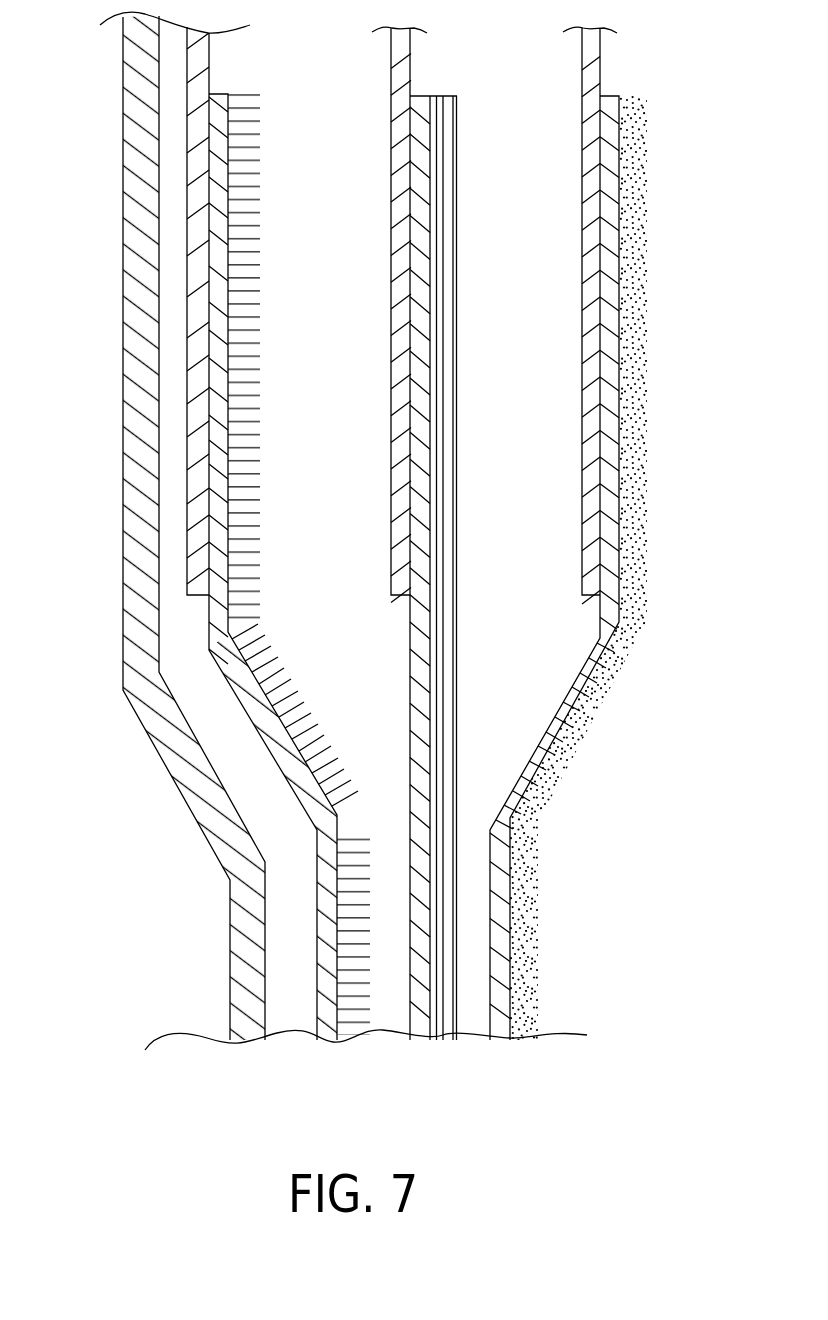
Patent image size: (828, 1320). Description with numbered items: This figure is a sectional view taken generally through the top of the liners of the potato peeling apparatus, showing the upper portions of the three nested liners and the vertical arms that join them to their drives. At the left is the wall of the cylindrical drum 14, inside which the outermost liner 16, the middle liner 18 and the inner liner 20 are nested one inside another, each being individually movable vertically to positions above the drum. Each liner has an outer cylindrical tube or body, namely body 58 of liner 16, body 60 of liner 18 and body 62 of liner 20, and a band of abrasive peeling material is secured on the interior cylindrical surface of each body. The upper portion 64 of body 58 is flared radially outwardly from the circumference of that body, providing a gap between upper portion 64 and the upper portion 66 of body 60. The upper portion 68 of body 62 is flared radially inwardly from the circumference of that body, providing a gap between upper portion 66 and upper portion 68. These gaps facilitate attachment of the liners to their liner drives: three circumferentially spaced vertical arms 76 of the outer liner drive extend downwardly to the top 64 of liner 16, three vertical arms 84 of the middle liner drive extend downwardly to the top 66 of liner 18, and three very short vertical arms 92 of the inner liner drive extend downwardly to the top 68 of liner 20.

The cylindrical drum 14 is at (129, 579).
The outermost liner 16 is at (230, 702).
The middle liner 18 is at (396, 862).
The inner liner 20 is at (495, 1048).
The body of outermost liner 58 is at (210, 637).
The body of middle liner 60 is at (412, 670).
The body of inner liner 62 is at (598, 643).
The upper portion of body 58 64 is at (217, 230).
The upper portion of body 60 66 is at (418, 218).
The upper portion of body 62 68 is at (615, 238).
The vertical arms 76 is at (200, 68).
The vertical arms 84 is at (407, 77).
The short vertical arms 92 is at (597, 62).